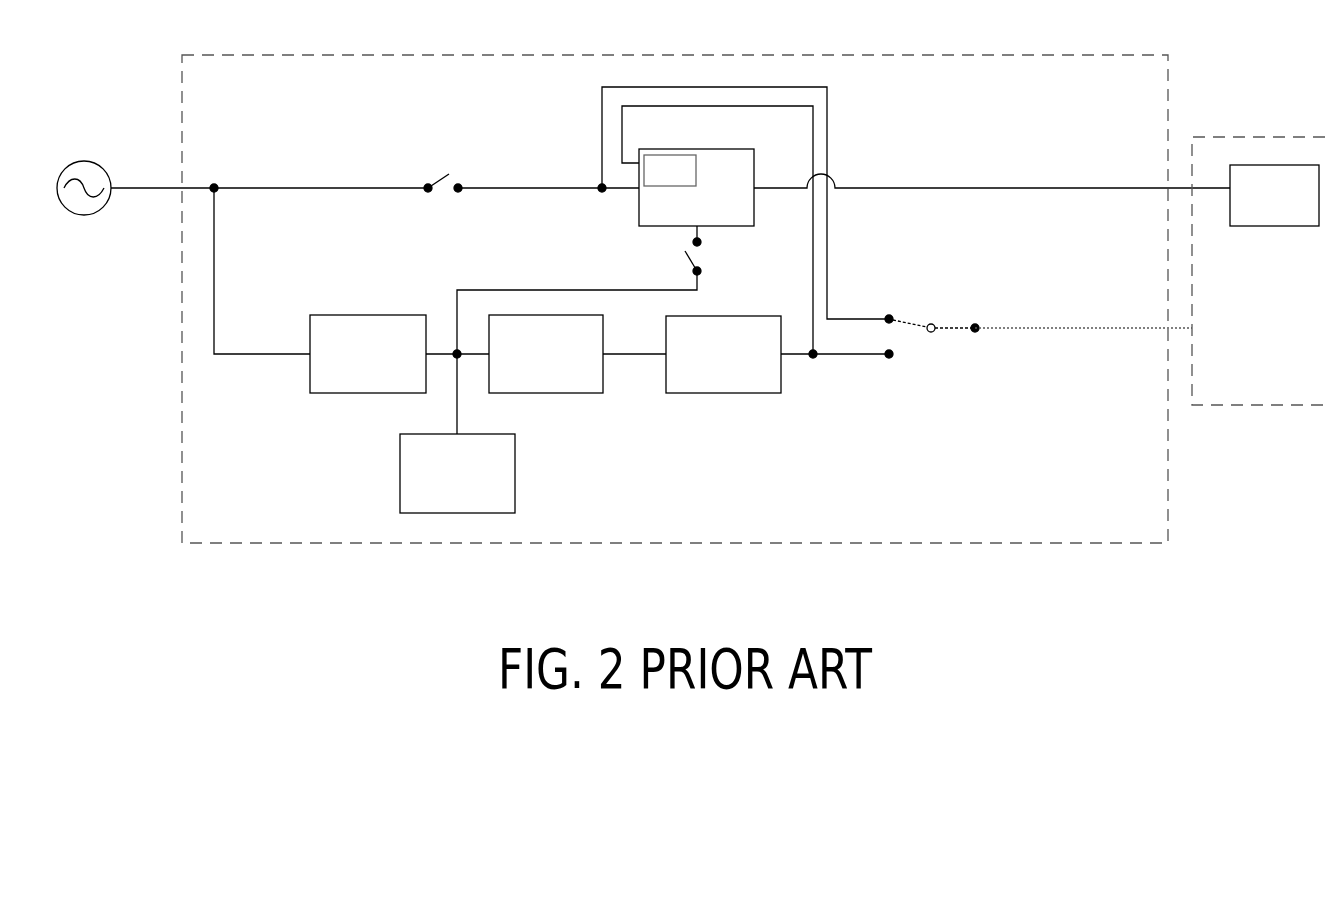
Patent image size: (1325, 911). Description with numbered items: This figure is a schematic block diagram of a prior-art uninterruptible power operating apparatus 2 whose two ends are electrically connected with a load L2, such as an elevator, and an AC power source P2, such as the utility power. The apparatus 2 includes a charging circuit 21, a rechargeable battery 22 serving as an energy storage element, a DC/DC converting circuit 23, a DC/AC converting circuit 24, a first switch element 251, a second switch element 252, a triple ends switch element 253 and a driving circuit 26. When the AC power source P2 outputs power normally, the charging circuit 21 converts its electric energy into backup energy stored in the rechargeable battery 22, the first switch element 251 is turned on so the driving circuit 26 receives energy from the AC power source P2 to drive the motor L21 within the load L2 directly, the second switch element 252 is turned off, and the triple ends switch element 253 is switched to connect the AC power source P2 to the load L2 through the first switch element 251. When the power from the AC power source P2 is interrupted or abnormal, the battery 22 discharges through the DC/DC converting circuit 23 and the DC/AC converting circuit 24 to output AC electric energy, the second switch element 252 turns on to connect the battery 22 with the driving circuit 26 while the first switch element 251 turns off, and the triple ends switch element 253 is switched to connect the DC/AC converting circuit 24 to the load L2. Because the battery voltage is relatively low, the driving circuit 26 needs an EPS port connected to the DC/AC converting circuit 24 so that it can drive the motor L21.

The uninterruptible power operating apparatus 2 is at (1141, 55).
The AC power source P2 is at (82, 161).
The first switch element 251 is at (433, 168).
The driving circuit 26 is at (732, 149).
The second switch element 252 is at (708, 268).
The charging circuit 21 is at (368, 315).
The rechargeable battery 22 is at (515, 465).
The DC/DC converting circuit 23 is at (546, 393).
The DC/AC converting circuit 24 is at (723, 393).
The triple ends switch element 253 is at (910, 315).
The load L2 is at (1260, 137).
The motor L21 is at (1273, 226).